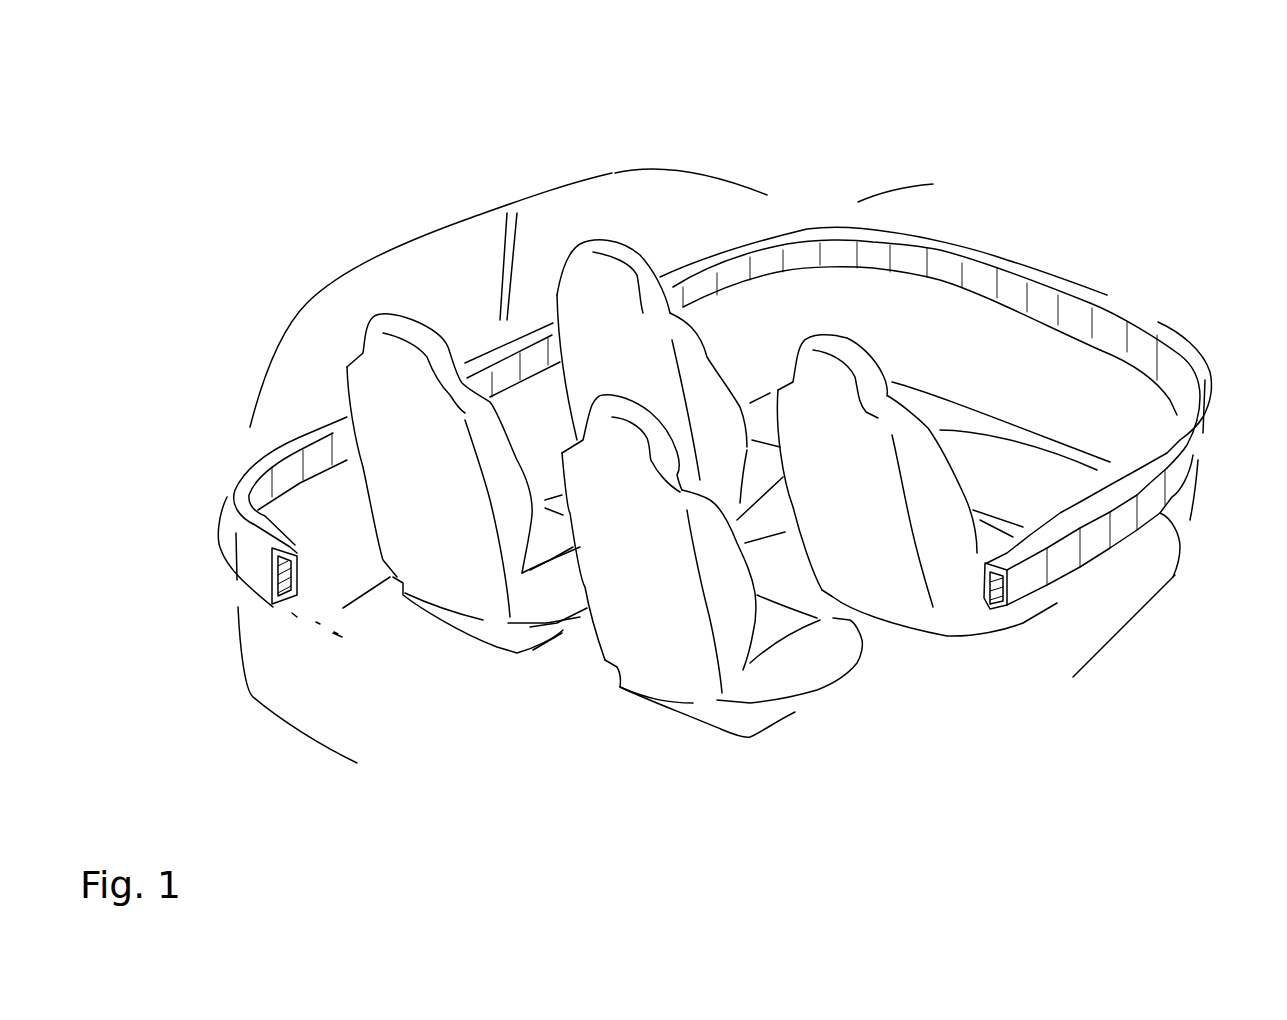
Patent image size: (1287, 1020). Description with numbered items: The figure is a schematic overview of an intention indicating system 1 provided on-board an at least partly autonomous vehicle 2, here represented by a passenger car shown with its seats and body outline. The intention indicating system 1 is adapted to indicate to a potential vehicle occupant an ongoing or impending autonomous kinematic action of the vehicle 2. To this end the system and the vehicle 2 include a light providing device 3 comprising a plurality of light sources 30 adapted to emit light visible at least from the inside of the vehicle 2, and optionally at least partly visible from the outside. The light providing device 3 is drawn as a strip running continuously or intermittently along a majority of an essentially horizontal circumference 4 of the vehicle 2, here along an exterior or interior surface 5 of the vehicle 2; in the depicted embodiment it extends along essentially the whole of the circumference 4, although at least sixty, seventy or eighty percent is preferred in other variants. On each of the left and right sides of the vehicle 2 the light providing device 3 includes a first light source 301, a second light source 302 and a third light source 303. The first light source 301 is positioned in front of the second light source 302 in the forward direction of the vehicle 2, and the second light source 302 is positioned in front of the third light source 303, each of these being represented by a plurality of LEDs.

The intention indicating system 1 is at (200, 151).
The vehicle 2 is at (1046, 114).
The light providing device 3 is at (198, 555).
The light sources 30 is at (278, 565).
The first light source 301 is at (735, 276).
The second light source 302 is at (503, 373).
The third light source 303 is at (285, 472).
The circumference 4 is at (1052, 277).
The surface 5 is at (1128, 560).